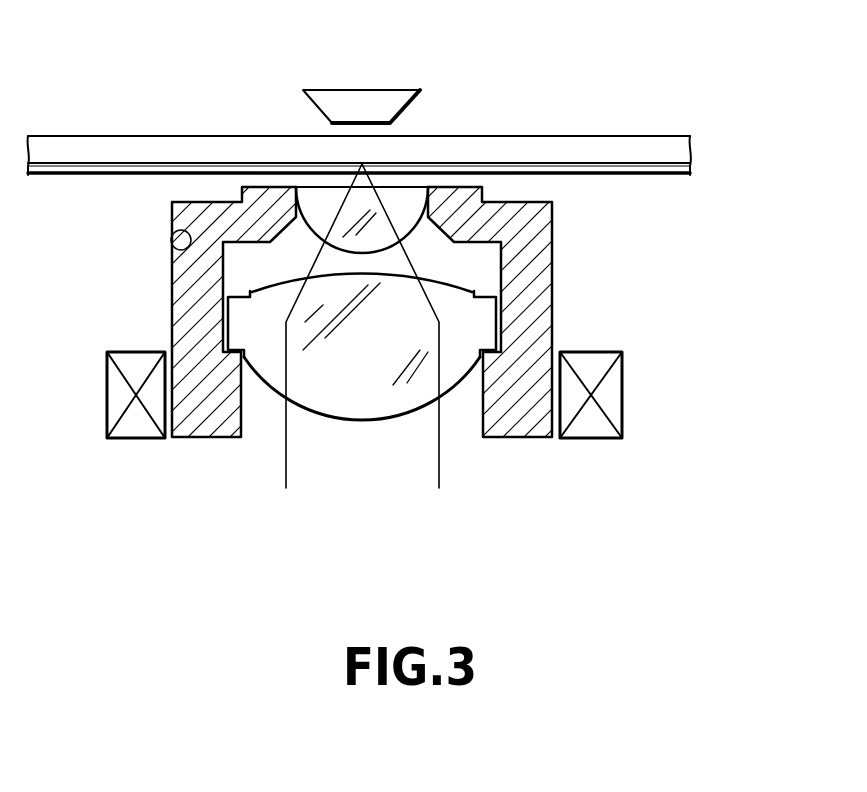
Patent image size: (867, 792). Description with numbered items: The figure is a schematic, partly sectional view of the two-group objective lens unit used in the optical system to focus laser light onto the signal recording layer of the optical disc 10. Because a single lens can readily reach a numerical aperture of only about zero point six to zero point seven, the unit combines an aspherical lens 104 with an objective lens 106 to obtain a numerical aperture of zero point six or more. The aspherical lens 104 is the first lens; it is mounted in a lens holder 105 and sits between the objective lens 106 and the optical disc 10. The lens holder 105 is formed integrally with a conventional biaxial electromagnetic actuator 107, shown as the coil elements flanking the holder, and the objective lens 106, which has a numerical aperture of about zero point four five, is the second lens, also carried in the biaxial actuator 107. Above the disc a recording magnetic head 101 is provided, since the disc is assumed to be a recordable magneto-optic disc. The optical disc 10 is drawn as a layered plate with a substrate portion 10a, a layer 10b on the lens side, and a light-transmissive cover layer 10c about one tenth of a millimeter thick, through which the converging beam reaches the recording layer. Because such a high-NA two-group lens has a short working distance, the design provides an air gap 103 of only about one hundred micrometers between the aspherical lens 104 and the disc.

The optical disc 10 is at (404, 155).
The substrate 10a is at (633, 145).
The protective layer 10b is at (671, 177).
The light-transmissive cover layer 10c is at (603, 177).
The recording magnetic head 101 is at (361, 88).
The air gap 103 is at (320, 186).
The aspherical lens 104 is at (408, 192).
The lens holder 105 is at (176, 246).
The objective lens 106 is at (365, 400).
The biaxial electromagnetic actuator 107 is at (633, 441).